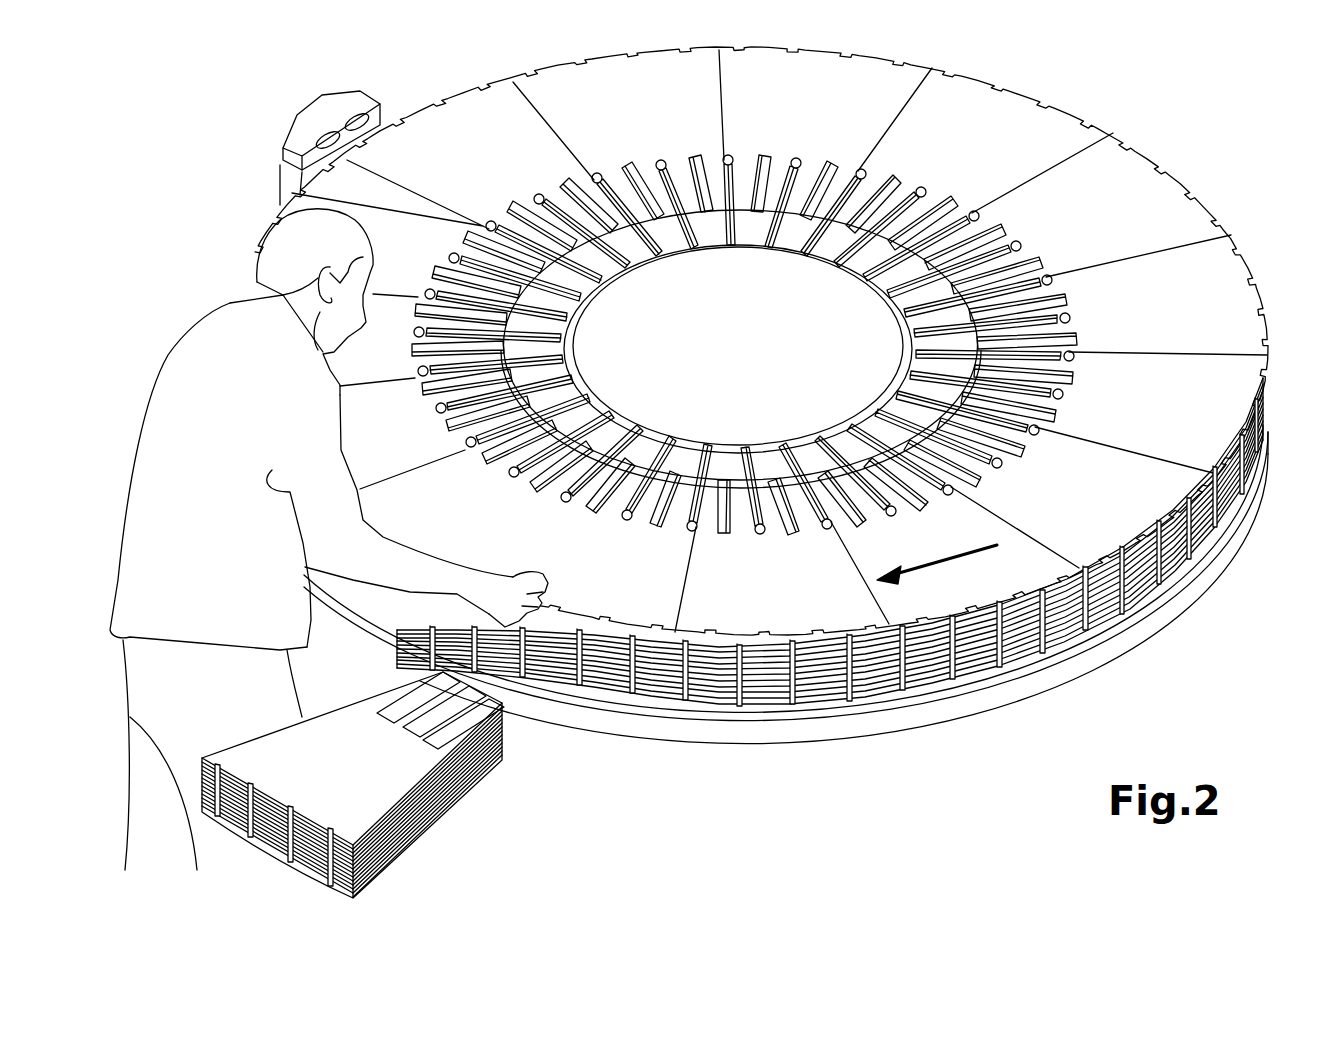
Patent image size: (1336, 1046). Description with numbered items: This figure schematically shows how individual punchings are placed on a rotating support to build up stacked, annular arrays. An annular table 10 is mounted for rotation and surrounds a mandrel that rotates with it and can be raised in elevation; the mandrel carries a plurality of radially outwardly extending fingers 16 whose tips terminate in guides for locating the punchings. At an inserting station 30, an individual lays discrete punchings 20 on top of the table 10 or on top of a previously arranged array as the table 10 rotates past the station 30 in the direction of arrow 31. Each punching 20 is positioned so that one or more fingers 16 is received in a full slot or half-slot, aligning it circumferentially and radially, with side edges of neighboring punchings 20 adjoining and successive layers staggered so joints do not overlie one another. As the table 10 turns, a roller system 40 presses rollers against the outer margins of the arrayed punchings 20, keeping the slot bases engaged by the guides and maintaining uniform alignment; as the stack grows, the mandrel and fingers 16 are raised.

The table 10 is at (931, 715).
The fingers 16 is at (617, 278).
The punchings 20 is at (1018, 592).
The inserting station 30 is at (459, 818).
The arrow 31 is at (932, 558).
The roller system 40 is at (283, 140).